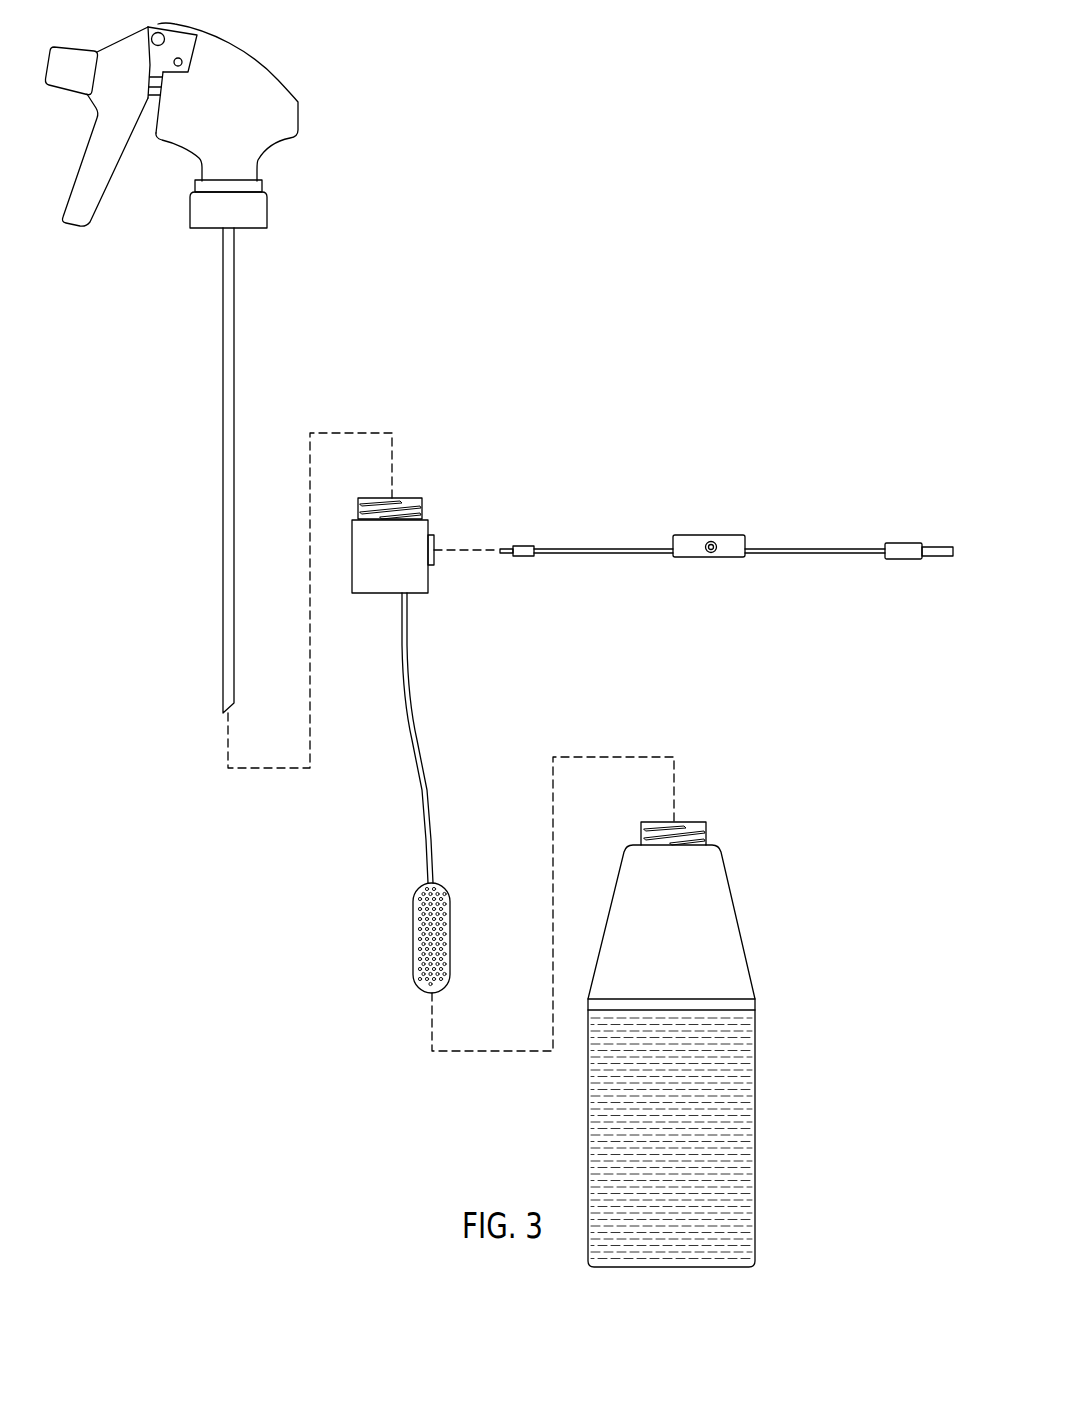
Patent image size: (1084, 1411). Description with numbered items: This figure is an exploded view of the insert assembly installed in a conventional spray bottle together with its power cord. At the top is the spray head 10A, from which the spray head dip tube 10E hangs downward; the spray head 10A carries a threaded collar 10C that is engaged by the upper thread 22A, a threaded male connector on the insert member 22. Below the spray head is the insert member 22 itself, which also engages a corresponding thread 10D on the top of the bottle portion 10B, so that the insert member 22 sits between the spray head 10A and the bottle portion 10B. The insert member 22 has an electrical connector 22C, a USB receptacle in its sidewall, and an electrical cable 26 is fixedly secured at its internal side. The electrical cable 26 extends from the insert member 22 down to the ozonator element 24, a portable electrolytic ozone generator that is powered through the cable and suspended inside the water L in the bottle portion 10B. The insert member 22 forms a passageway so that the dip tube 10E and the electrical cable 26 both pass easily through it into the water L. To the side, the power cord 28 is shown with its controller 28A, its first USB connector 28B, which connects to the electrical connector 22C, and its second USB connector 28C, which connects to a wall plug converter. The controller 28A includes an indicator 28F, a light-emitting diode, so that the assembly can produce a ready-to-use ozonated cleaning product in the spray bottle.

The spray head 10A is at (237, 57).
The bottle portion 10B is at (708, 1028).
The threaded collar 10C is at (258, 210).
The thread 10D is at (692, 832).
The spray head dip tube 10E is at (230, 500).
The insert member 22 is at (431, 500).
The upper thread 22A is at (410, 497).
The electrical connector 22C is at (433, 498).
The ozonator element 24 is at (413, 945).
The electrical cable 26 is at (423, 768).
The power cord 28 is at (727, 573).
The controller 28A is at (741, 543).
The first USB connector 28B is at (525, 545).
The second USB connector 28C is at (919, 518).
The indicator 28F is at (712, 553).
The water L is at (693, 1120).